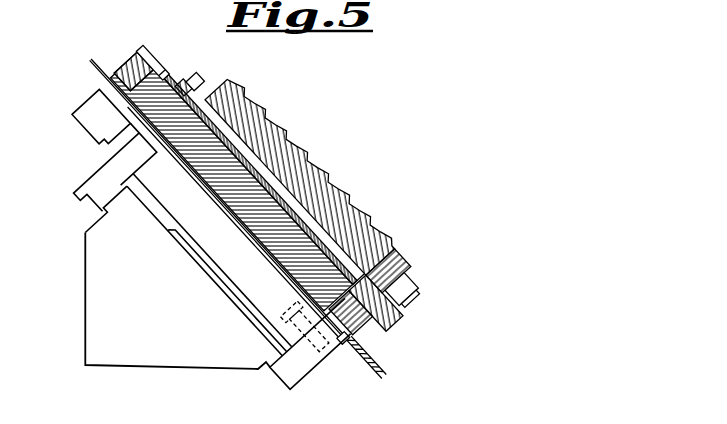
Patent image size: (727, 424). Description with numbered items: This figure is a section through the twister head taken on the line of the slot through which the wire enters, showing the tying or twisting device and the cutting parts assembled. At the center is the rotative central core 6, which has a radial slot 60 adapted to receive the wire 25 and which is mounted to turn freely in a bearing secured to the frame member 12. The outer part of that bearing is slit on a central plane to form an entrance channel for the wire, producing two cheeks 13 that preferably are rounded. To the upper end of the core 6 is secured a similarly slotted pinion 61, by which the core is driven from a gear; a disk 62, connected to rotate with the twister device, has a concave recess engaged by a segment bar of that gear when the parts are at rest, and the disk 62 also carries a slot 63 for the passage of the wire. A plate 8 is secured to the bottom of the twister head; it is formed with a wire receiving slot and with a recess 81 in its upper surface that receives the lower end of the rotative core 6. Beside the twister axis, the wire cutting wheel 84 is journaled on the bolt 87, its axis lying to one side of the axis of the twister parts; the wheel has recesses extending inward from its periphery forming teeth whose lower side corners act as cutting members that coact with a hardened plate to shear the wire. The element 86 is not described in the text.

The central core 6 is at (282, 217).
The plate 8 is at (291, 367).
The frame member 12 is at (276, 122).
The cheeks 13 is at (102, 278).
The wire 25 is at (100, 73).
The radial slot 60 is at (212, 260).
The slotted pinion 61 is at (148, 64).
The disk 62 is at (195, 74).
The slot 63 is at (76, 202).
The recess 81 is at (282, 354).
The wire cutting wheel 84 is at (400, 300).
The washer 86 is at (406, 292).
The bolt 87 is at (392, 350).